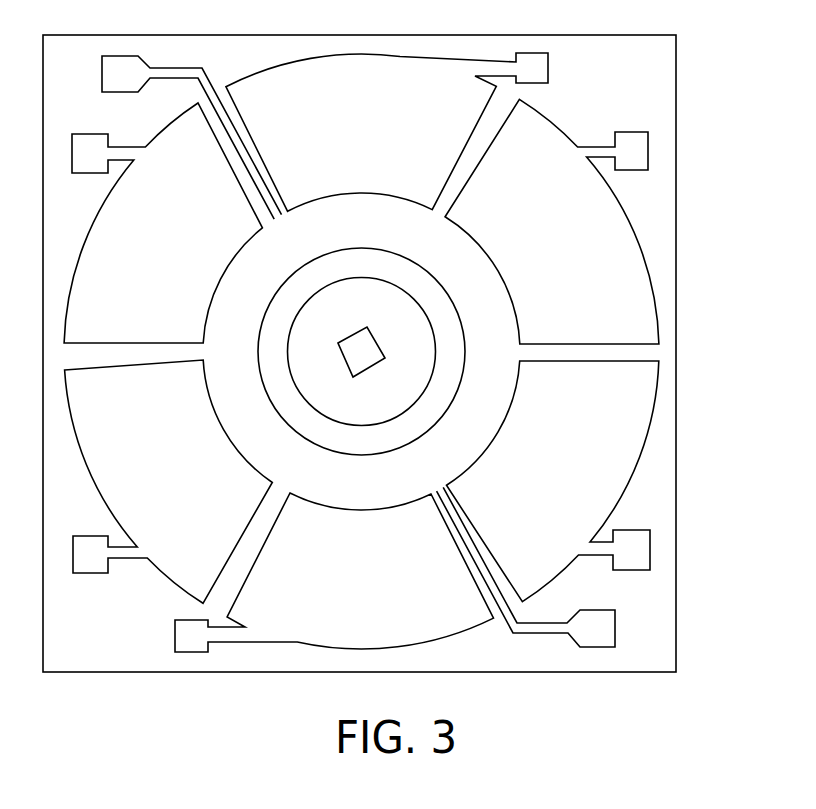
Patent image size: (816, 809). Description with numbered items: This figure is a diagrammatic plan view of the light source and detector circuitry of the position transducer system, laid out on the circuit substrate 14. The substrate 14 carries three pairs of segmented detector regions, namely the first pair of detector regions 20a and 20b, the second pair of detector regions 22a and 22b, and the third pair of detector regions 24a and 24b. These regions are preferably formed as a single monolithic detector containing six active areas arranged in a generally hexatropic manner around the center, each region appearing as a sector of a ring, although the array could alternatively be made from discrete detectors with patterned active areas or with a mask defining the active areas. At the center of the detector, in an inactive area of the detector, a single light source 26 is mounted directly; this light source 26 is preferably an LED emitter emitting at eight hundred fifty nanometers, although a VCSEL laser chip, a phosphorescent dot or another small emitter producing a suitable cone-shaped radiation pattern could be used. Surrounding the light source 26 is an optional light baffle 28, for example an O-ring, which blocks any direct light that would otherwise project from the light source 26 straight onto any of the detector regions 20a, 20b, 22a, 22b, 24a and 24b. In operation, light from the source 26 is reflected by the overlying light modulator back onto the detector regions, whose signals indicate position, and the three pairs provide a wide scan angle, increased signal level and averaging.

The circuit substrate 14 is at (683, 192).
The segmented detector region 20a is at (605, 298).
The segmented detector region 20b is at (592, 471).
The segmented detector region 22a is at (390, 603).
The segmented detector region 22b is at (170, 445).
The segmented detector region 24a is at (168, 283).
The segmented detector region 24b is at (345, 135).
The light source 26 is at (362, 353).
The light baffle 28 is at (385, 248).